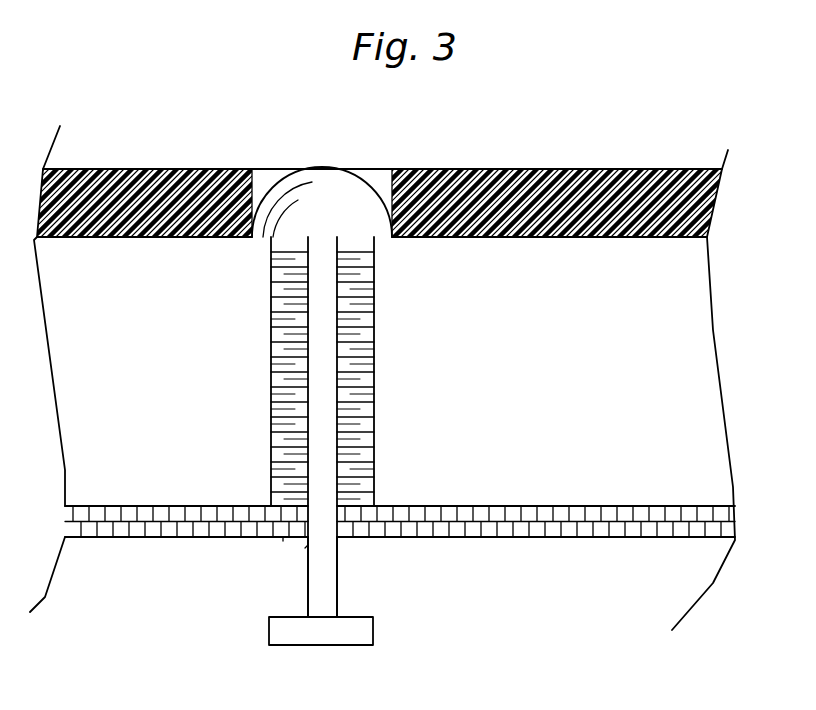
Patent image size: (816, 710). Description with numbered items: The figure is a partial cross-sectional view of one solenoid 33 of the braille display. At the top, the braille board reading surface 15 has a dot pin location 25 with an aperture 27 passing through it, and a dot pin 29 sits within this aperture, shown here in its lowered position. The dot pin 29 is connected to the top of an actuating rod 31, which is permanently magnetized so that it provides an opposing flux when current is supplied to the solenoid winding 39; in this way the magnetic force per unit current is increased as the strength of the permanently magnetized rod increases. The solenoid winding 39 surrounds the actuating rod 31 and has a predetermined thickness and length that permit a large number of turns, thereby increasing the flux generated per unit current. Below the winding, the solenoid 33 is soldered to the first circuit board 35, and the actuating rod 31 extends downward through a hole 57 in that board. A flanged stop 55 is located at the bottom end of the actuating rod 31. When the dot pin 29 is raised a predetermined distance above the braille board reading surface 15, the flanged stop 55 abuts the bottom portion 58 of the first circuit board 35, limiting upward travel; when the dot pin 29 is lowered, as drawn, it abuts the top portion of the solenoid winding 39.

The braille board reading surface 15 is at (612, 228).
The dot pin location 25 is at (358, 168).
The aperture 27 is at (377, 186).
The dot pin 29 is at (323, 187).
The actuating rod 31 is at (325, 580).
The solenoid 33 is at (390, 427).
The first circuit board 35 is at (553, 519).
The solenoid winding 39 is at (357, 306).
The flanged stop 55 is at (373, 636).
The hole 57 is at (305, 548).
The bottom portion 58 is at (288, 539).